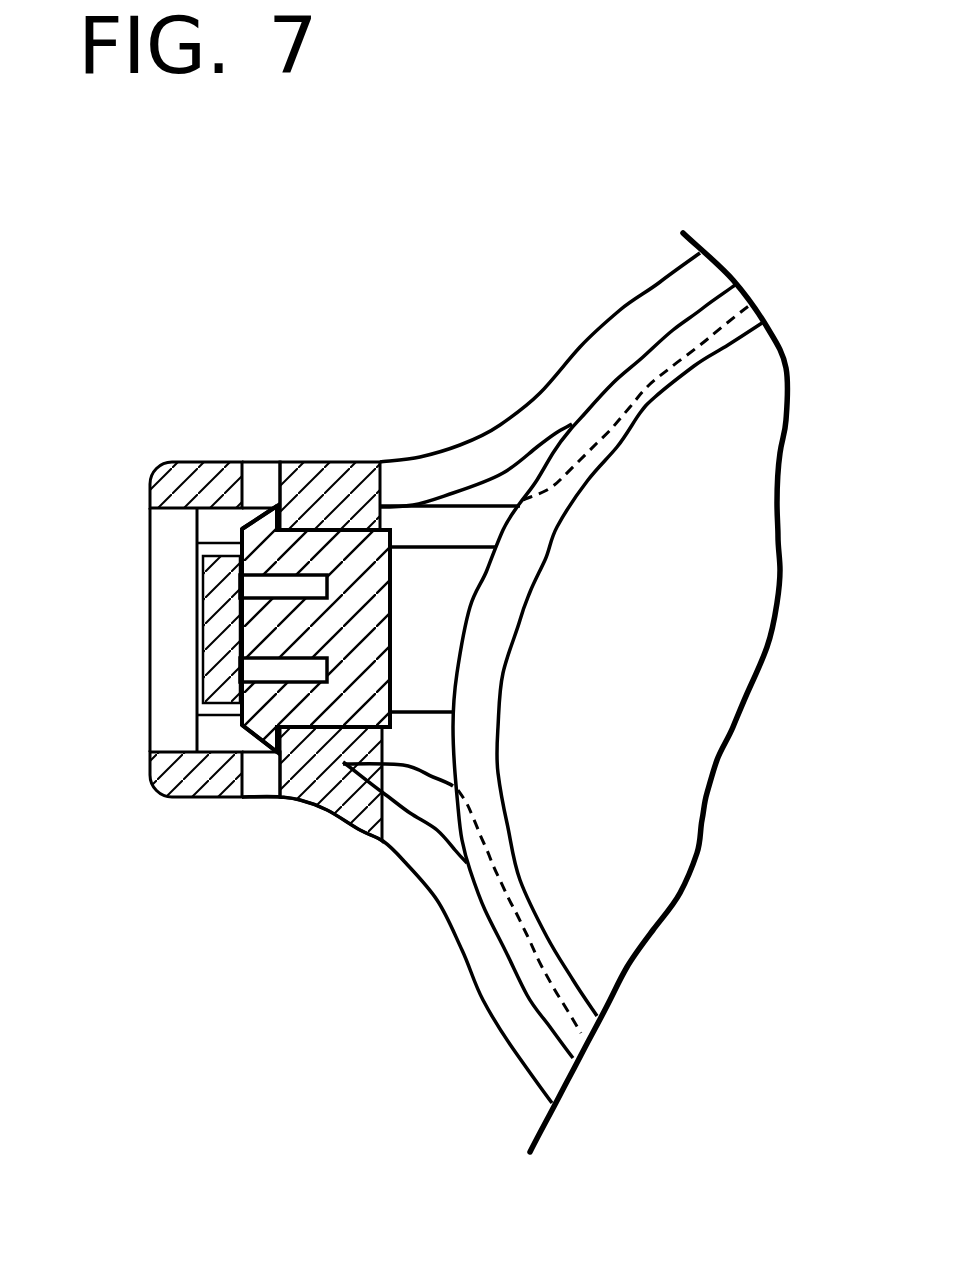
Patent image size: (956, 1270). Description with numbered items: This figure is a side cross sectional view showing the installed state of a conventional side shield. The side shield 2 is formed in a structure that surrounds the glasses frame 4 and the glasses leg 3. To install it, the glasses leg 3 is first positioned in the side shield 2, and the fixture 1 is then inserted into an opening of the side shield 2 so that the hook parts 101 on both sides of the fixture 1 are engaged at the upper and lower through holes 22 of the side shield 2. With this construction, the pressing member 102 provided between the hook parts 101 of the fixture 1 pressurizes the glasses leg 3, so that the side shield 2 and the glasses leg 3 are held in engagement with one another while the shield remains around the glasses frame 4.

The fixture 1 is at (380, 620).
The side shield 2 is at (160, 722).
The glasses leg 3 is at (207, 630).
The glasses frame 4 is at (707, 348).
The through holes 22 is at (270, 467).
The hook parts 101 is at (268, 507).
The pressing member 102 is at (253, 612).